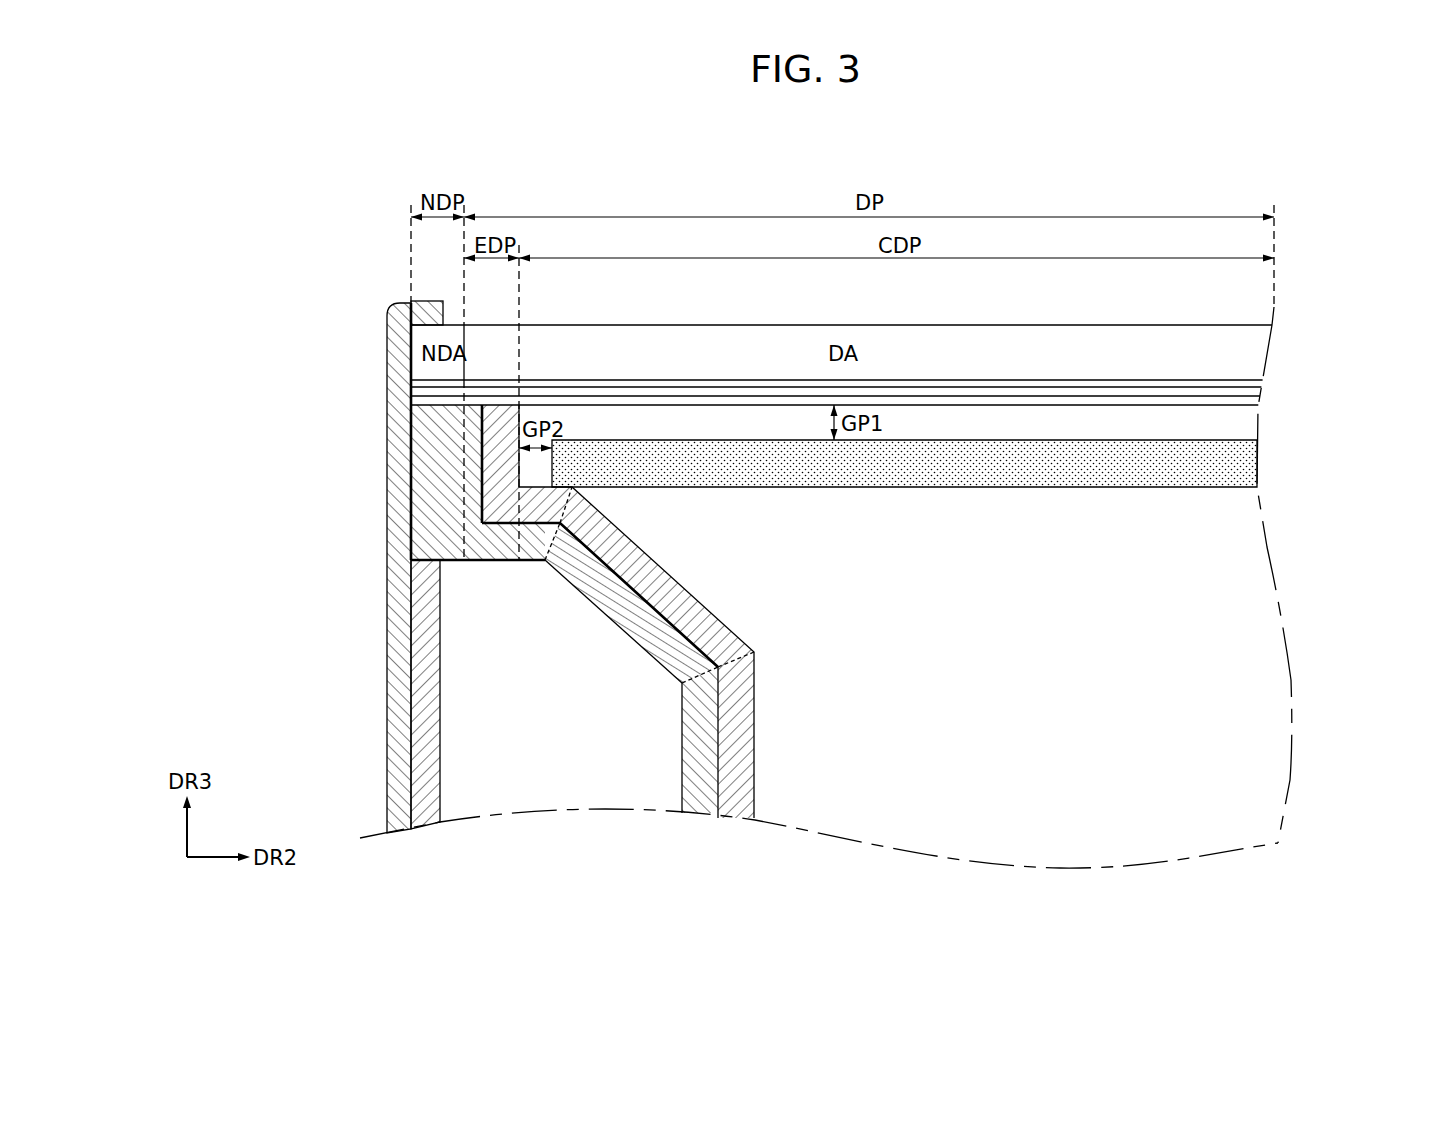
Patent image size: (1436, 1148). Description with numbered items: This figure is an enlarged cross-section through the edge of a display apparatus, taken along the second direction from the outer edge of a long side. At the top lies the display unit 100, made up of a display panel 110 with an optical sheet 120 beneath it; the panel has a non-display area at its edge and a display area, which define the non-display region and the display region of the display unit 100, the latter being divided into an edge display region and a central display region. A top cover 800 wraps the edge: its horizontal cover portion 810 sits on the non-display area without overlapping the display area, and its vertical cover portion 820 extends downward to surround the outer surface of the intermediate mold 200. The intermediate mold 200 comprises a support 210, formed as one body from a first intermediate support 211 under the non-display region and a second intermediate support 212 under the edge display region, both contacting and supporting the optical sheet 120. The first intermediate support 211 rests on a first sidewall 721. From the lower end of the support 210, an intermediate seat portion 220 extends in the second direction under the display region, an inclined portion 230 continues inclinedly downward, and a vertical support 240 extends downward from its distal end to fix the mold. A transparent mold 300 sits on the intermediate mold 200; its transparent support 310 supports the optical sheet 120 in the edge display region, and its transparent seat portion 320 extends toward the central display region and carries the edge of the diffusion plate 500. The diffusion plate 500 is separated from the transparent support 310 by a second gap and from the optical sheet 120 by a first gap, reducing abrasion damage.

The display unit 100 is at (917, 365).
The display panel 110 is at (1273, 351).
The optical sheet 120 is at (1270, 391).
The diffusion plate 500 is at (1244, 463).
The top cover 800 is at (355, 557).
The horizontal cover portion 810 is at (432, 303).
The vertical cover portion 820 is at (402, 338).
The transparent mold 300 is at (511, 611).
The transparent support 310 is at (502, 447).
The transparent seat portion 320 is at (536, 500).
The intermediate mold 200 is at (463, 617).
The support 210 is at (406, 485).
The first intermediate support 211 is at (428, 523).
The second intermediate support 212 is at (473, 537).
The intermediate seat portion 220 is at (504, 557).
The inclined portion 230 is at (612, 602).
The vertical support 240 is at (692, 714).
The first sidewall 721 is at (424, 772).